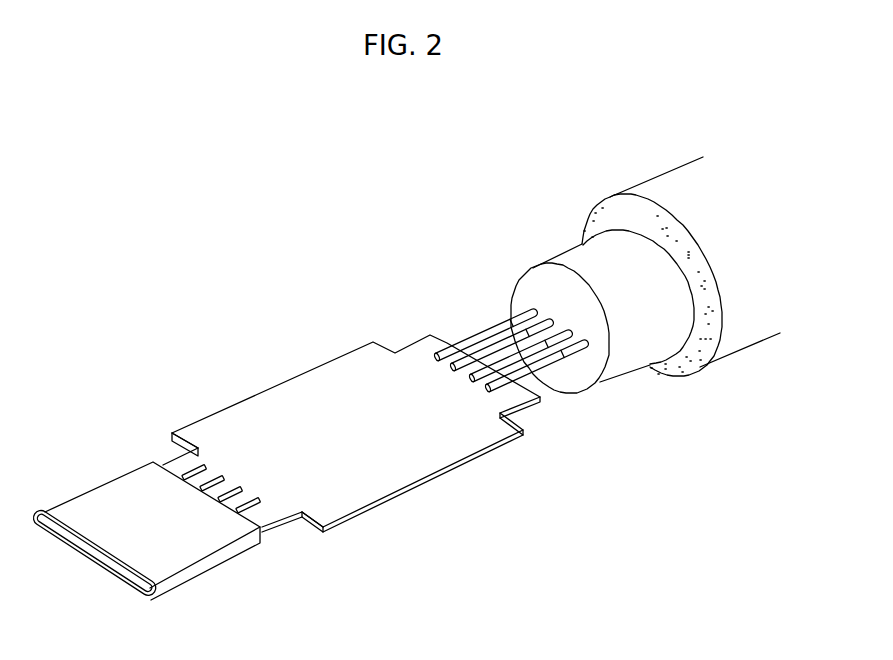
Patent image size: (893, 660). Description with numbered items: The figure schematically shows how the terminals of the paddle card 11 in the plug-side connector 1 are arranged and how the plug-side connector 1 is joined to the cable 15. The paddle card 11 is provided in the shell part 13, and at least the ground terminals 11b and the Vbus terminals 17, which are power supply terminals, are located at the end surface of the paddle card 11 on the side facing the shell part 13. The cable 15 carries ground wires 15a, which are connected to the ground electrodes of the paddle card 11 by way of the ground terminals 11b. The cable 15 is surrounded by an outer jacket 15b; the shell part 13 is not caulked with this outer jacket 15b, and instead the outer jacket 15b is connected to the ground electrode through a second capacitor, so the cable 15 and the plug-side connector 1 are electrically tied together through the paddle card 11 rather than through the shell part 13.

The plug-side connector 1 is at (307, 184).
The paddle card 11 is at (355, 487).
The ground terminal 11b is at (203, 466).
The shell part 13 is at (88, 514).
The cable 15 is at (737, 364).
The ground wire 15a is at (455, 370).
The outer jacket 15b is at (657, 234).
The Vbus terminal 17 is at (223, 477).